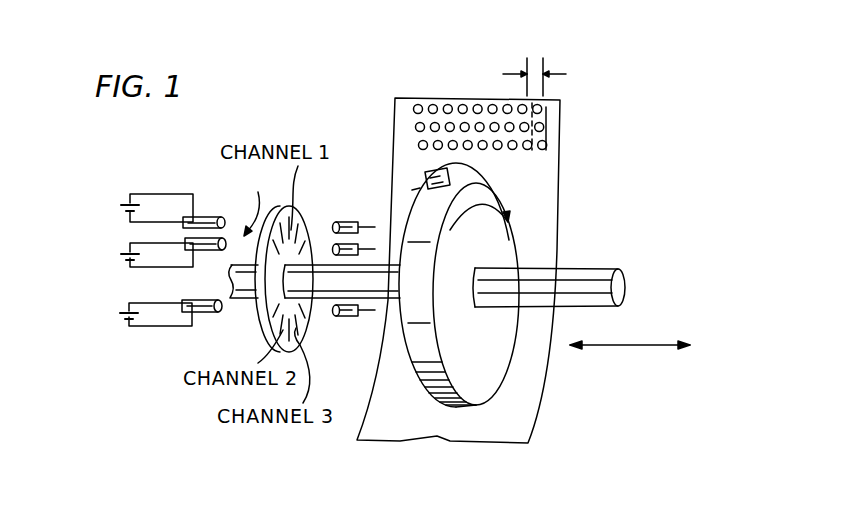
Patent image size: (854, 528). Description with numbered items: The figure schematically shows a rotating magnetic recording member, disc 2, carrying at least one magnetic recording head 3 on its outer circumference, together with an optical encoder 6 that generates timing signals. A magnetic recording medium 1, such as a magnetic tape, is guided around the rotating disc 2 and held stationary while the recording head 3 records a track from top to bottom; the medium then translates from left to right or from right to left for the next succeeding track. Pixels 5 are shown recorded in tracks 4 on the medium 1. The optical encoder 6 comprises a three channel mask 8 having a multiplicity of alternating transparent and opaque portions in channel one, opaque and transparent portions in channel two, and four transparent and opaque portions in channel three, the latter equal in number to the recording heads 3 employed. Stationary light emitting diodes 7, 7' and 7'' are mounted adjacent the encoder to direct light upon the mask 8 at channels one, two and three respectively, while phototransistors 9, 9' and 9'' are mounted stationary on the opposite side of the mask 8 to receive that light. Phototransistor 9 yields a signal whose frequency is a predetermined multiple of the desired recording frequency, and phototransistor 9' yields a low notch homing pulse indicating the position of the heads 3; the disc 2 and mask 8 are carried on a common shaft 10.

The magnetic recording medium 1 is at (548, 200).
The rotating disc 2 is at (490, 356).
The magnetic recording head 3 is at (438, 191).
The tracks 4 is at (575, 77).
The pixels 5 is at (461, 106).
The optical encoder 6 is at (256, 199).
The light emitting diode 7 is at (173, 207).
The light emitting diode 7' is at (173, 261).
The light emitting diode 7'' is at (171, 322).
The three channel mask 8 is at (265, 330).
The phototransistor 9 is at (354, 210).
The phototransistor 9' is at (343, 225).
The phototransistor 9'' is at (345, 327).
The drive shaft 10 is at (590, 283).